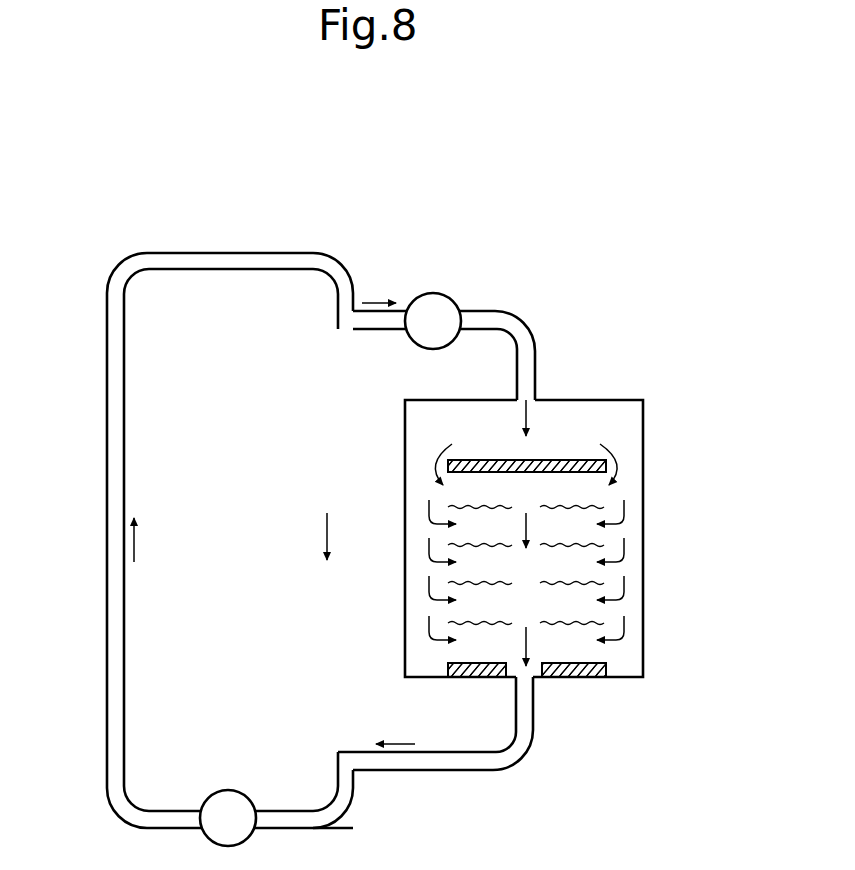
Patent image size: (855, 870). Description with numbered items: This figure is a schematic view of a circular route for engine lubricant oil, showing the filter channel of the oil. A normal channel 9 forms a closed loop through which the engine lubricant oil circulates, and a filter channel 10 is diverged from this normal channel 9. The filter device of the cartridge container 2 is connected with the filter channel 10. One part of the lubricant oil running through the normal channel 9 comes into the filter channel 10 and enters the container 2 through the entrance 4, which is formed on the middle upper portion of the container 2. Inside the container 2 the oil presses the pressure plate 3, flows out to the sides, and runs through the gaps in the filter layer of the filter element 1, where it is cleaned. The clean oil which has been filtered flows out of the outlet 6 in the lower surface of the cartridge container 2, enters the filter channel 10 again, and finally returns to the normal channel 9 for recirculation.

The filter element 1 is at (590, 623).
The cartridge container 2 is at (643, 523).
The pressure plate 3 is at (596, 458).
The entrance 4 is at (531, 383).
The outlet 6 is at (534, 688).
The normal channel 9 is at (107, 590).
The filter channel 10 is at (510, 757).